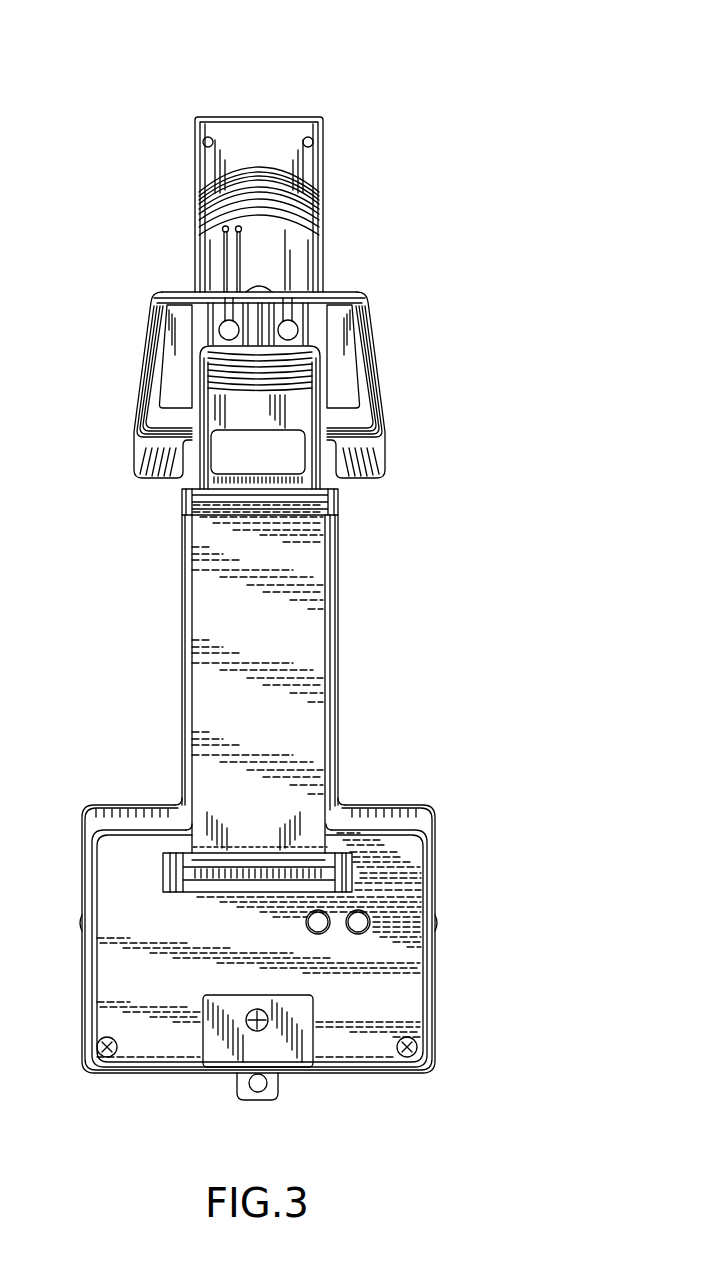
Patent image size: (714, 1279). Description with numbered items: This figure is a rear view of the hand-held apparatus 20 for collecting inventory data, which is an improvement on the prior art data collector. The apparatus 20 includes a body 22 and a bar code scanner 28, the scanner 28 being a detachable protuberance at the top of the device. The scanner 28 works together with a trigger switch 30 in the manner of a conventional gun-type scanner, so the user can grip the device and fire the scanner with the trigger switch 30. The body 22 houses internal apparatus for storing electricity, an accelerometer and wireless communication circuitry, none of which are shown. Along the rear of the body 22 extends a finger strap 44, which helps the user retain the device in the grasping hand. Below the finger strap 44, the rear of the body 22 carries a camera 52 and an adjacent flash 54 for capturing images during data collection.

The hand-held apparatus 20 is at (516, 231).
The body 22 is at (311, 405).
The bar code scanner 28 is at (238, 104).
The trigger switch 30 is at (220, 459).
The finger strap 44 is at (313, 663).
The camera 52 is at (366, 916).
The flash 54 is at (320, 930).